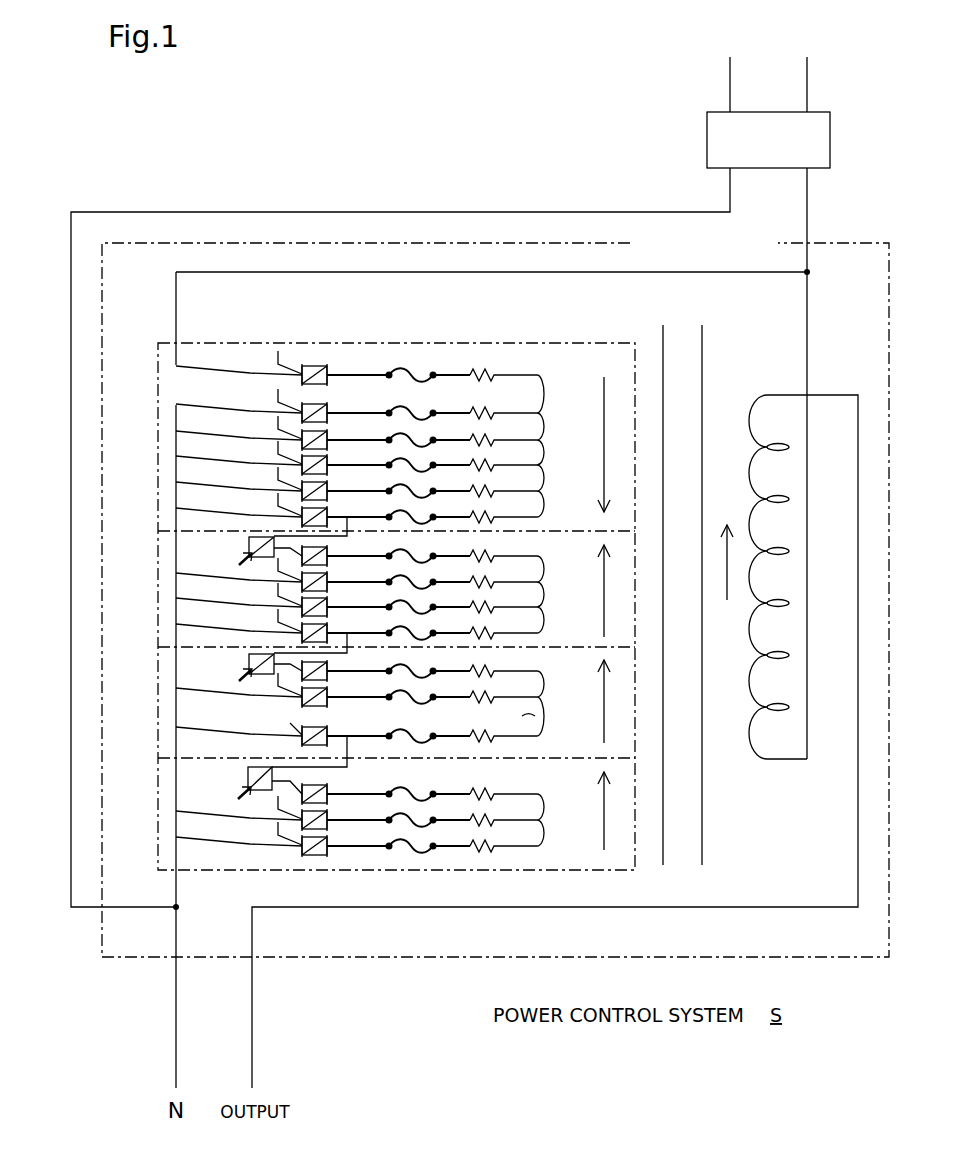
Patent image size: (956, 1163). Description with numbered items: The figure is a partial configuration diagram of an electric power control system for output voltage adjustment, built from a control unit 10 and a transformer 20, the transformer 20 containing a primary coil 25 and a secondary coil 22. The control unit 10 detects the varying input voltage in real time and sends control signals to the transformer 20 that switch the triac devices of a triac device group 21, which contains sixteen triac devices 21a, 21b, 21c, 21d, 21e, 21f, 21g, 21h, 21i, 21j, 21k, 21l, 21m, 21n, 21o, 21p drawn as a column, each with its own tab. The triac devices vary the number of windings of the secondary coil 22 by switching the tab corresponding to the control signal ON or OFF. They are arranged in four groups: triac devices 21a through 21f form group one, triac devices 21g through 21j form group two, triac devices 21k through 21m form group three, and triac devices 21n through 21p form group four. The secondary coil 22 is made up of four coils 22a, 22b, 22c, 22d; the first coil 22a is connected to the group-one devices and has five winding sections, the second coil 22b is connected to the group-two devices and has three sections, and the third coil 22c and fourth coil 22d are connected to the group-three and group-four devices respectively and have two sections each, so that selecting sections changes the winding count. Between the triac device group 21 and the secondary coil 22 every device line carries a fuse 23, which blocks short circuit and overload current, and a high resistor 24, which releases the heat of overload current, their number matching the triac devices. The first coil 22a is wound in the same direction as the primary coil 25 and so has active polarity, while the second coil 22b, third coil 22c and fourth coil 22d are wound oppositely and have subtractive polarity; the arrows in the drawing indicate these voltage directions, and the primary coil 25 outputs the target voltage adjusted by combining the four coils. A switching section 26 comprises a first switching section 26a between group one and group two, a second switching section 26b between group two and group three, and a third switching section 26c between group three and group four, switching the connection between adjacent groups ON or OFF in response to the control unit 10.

The control unit 10 is at (707, 126).
The transformer 20 is at (495, 596).
The triac device group 21 is at (322, 333).
The triac device 21a is at (327, 365).
The triac device 21b is at (282, 405).
The triac device 21c is at (282, 432).
The triac device 21d is at (282, 457).
The triac device 21e is at (282, 483).
The triac device 21f is at (282, 509).
The triac device 21g is at (329, 556).
The triac device 21h is at (282, 574).
The triac device 21i is at (282, 599).
The triac device 21j is at (282, 625).
The triac device 21k is at (329, 671).
The triac device 21l is at (282, 689).
The triac device 21m is at (282, 729).
The triac device 21n is at (329, 794).
The triac device 21o is at (282, 812).
The triac device 21p is at (282, 838).
The secondary coil 22 is at (536, 355).
The first coil 22a is at (546, 374).
The second coil 22b is at (541, 556).
The third coil 22c is at (541, 671).
The fourth coil 22d is at (541, 794).
The fuse 23 is at (400, 368).
The high resistor 24 is at (478, 366).
The primary coil 25 is at (757, 393).
The switching section 26 is at (145, 528).
The first switching section 26a is at (247, 549).
The second switching section 26b is at (247, 664).
The third switching section 26c is at (246, 778).